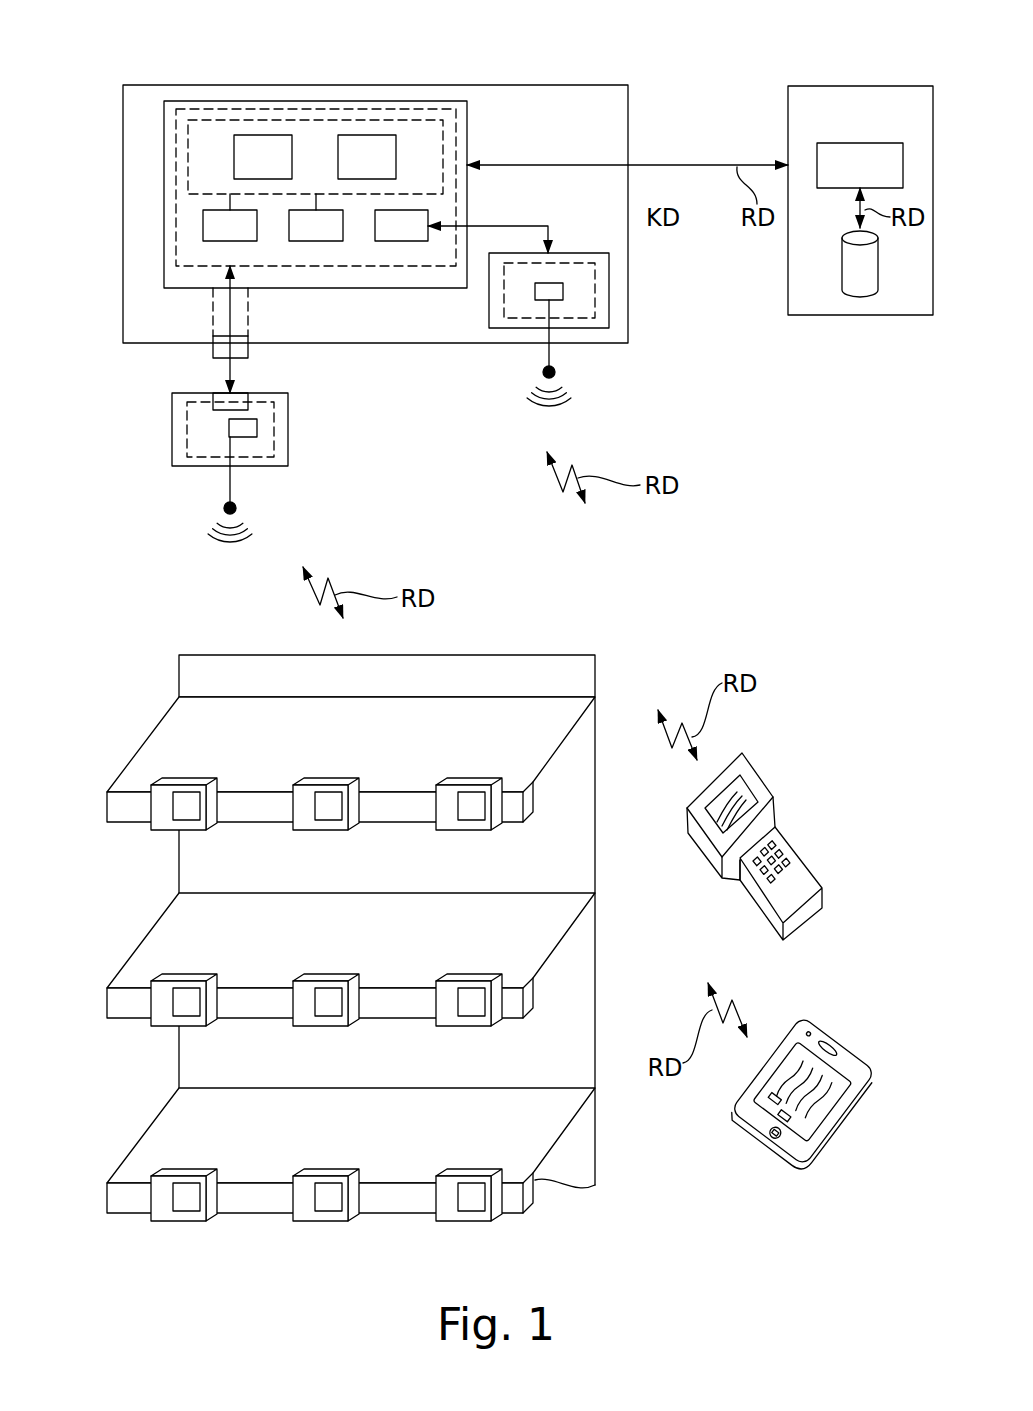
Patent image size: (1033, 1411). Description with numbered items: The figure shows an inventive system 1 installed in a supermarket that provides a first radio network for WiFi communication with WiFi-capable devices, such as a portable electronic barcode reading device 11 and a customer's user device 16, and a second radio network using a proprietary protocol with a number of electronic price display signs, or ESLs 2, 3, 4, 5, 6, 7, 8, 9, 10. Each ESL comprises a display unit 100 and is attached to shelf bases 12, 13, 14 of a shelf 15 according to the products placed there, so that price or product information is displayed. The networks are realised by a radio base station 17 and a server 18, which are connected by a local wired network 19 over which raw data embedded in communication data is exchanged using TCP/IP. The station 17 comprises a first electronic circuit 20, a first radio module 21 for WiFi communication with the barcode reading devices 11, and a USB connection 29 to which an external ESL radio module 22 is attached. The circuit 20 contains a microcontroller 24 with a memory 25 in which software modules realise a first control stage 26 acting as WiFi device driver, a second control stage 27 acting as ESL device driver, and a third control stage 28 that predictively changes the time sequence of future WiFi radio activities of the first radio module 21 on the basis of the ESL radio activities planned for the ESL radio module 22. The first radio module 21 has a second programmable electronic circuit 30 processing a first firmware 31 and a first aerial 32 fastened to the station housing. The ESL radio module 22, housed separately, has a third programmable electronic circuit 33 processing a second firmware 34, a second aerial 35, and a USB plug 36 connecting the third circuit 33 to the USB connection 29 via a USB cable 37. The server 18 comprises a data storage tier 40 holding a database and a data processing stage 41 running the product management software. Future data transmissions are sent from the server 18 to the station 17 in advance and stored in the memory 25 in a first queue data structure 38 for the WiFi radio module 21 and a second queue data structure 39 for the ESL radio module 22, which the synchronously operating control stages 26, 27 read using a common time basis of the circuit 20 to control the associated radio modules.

The system 1 is at (752, 62).
The electronic price display sign (ESL) 2 is at (195, 783).
The electronic price display sign (ESL) 3 is at (337, 783).
The electronic price display sign (ESL) 4 is at (478, 783).
The electronic price display sign (ESL) 5 is at (195, 979).
The electronic price display sign (ESL) 6 is at (337, 979).
The electronic price display sign (ESL) 7 is at (478, 979).
The electronic price display sign (ESL) 8 is at (195, 1174).
The electronic price display sign (ESL) 9 is at (337, 1174).
The electronic price display sign (ESL) 10 is at (478, 1174).
The portable electronic barcode reading device 11 is at (760, 776).
The shelf base 12 is at (147, 737).
The shelf base 13 is at (147, 930).
The shelf base 14 is at (147, 1130).
The shelf 15 is at (542, 650).
The user device 16 is at (822, 1030).
The radio base station 17 is at (572, 85).
The server 18 is at (825, 86).
The local wired network (LAN) 19 is at (700, 165).
The first electronic circuit 20 is at (467, 119).
The first radio module 21 is at (602, 274).
The ESL radio module 22 is at (283, 410).
The microcontroller 24 is at (456, 186).
The memory 25 is at (198, 148).
The first control stage 26 is at (398, 228).
The second control stage 27 is at (232, 230).
The third control stage 28 is at (312, 228).
The USB connection 29 is at (227, 350).
The second programmable electronic circuit 30 is at (590, 312).
The first firmware 31 is at (563, 287).
The first aerial 32 is at (550, 353).
The third programmable electronic circuit 33 is at (265, 438).
The second firmware 34 is at (243, 426).
The second aerial 35 is at (217, 482).
The USB plug 36 is at (213, 397).
The USB cable 37 is at (210, 362).
The first queue data structure 38 is at (367, 145).
The second queue data structure 39 is at (263, 145).
The data storage tier 40 is at (873, 270).
The data processing stage 41 is at (860, 155).
The display unit 100 is at (187, 813).